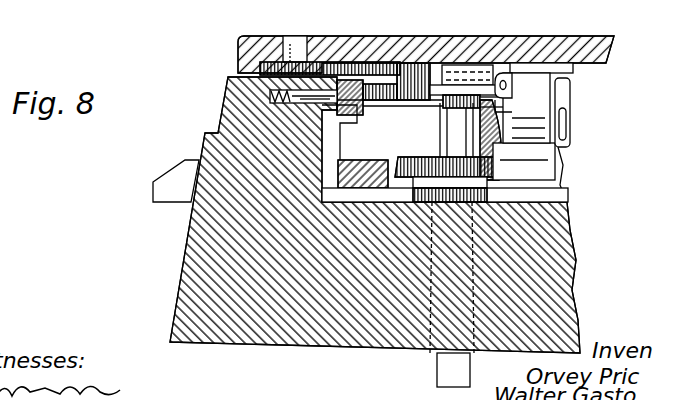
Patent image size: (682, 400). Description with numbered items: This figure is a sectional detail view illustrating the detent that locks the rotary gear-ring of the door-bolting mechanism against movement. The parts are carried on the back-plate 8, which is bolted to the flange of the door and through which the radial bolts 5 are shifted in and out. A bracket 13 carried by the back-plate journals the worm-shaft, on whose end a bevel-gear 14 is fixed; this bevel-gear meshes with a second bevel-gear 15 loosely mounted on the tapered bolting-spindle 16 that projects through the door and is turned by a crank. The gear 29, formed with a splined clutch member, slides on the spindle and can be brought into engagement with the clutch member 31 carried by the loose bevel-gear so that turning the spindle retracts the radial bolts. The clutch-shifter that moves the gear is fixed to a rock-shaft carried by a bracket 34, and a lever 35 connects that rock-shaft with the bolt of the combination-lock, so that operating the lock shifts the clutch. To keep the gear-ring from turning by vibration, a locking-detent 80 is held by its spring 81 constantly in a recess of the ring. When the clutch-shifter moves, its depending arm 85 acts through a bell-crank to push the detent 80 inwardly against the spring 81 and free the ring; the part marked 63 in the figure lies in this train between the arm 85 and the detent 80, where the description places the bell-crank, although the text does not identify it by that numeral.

The radial bolt 5 is at (366, 215).
The back-plate 8 is at (610, 44).
The bracket 13 is at (560, 100).
The bevel-gear 14 is at (512, 166).
The bevel-gear 15 is at (494, 190).
The tapered spindle 16 is at (442, 364).
The gear 29 is at (427, 72).
The clutch member 31 is at (428, 160).
The bracket 34 is at (480, 72).
The lever 35 is at (496, 112).
The block 63 is at (392, 115).
The locking-detent 80 is at (306, 90).
The spring 81 is at (269, 96).
The arm 85 is at (437, 106).